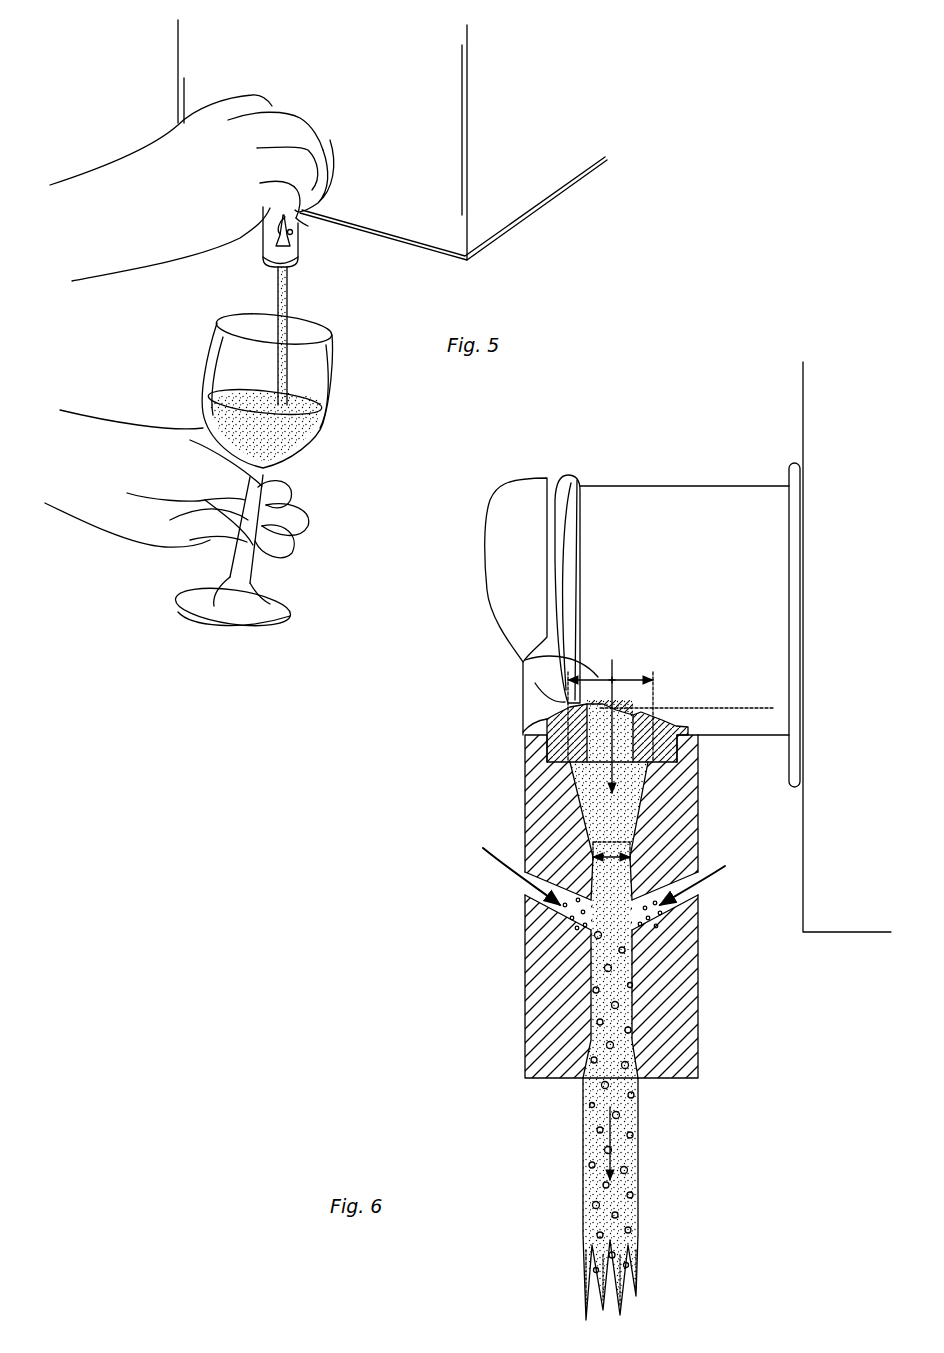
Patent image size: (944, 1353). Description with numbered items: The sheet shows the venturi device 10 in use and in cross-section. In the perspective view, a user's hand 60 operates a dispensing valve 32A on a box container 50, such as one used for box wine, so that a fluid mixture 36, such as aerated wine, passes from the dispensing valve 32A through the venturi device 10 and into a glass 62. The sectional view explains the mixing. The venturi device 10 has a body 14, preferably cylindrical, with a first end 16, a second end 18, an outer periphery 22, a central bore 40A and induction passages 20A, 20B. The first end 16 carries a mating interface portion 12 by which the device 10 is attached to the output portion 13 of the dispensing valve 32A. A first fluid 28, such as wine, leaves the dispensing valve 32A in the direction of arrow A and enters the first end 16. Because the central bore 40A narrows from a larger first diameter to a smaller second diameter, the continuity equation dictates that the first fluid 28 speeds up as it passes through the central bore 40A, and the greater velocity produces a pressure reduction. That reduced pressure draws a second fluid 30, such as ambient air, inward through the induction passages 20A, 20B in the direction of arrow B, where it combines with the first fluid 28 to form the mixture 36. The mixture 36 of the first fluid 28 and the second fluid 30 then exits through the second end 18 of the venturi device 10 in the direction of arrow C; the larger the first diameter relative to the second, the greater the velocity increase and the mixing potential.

In FIG. 5, the venturi device 10 is at (305, 245).
In FIG. 6, the venturi device 10 is at (378, 815).
In FIG. 6, the mating interface portion 12 is at (557, 721).
In FIG. 6, the output portion 13 is at (658, 722).
In FIG. 6, the body 14 is at (680, 1015).
In FIG. 6, the first end 16 is at (527, 728).
In FIG. 6, the second end 18 is at (665, 1080).
In FIG. 6, the induction passage 20A is at (690, 893).
In FIG. 6, the induction passage 20B is at (525, 893).
In FIG. 6, the outer periphery 22 is at (524, 1020).
In FIG. 6, the first fluid 28 is at (630, 815).
In FIG. 6, the second fluid 30 is at (588, 925).
In FIG. 6, the dispensing valve 32A is at (600, 525).
In FIG. 5, the fluid mixture 36 is at (276, 296).
In FIG. 6, the fluid mixture 36 is at (638, 1183).
In FIG. 6, the central bore 40A is at (592, 968).
In FIG. 5, the box container 50 is at (512, 183).
In FIG. 6, the box container 50 is at (820, 443).
In FIG. 5, the user's hand 60 is at (155, 165).
In FIG. 5, the glass 62 is at (337, 366).